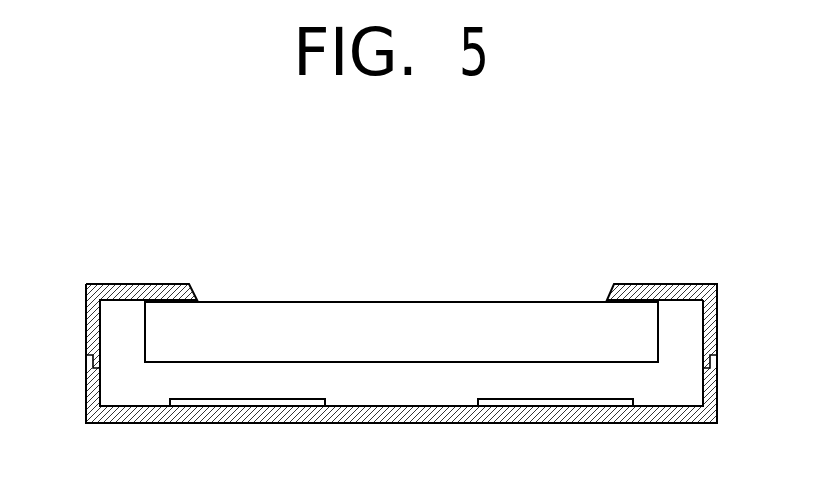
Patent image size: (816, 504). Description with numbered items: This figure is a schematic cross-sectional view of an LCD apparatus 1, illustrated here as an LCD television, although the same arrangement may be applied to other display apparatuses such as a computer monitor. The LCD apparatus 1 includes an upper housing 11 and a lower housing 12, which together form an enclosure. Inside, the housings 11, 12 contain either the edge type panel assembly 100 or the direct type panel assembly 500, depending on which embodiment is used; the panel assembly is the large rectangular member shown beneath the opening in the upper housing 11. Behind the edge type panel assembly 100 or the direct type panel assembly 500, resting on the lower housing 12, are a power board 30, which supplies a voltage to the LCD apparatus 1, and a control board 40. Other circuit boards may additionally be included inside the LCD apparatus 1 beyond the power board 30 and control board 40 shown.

The LCD apparatus 1 is at (408, 330).
The upper housing 11 is at (92, 323).
The lower housing 12 is at (92, 388).
The edge type panel assembly 100 is at (401, 292).
The direct type panel assembly 500 is at (467, 308).
The power board 30 is at (257, 402).
The control board 40 is at (522, 402).